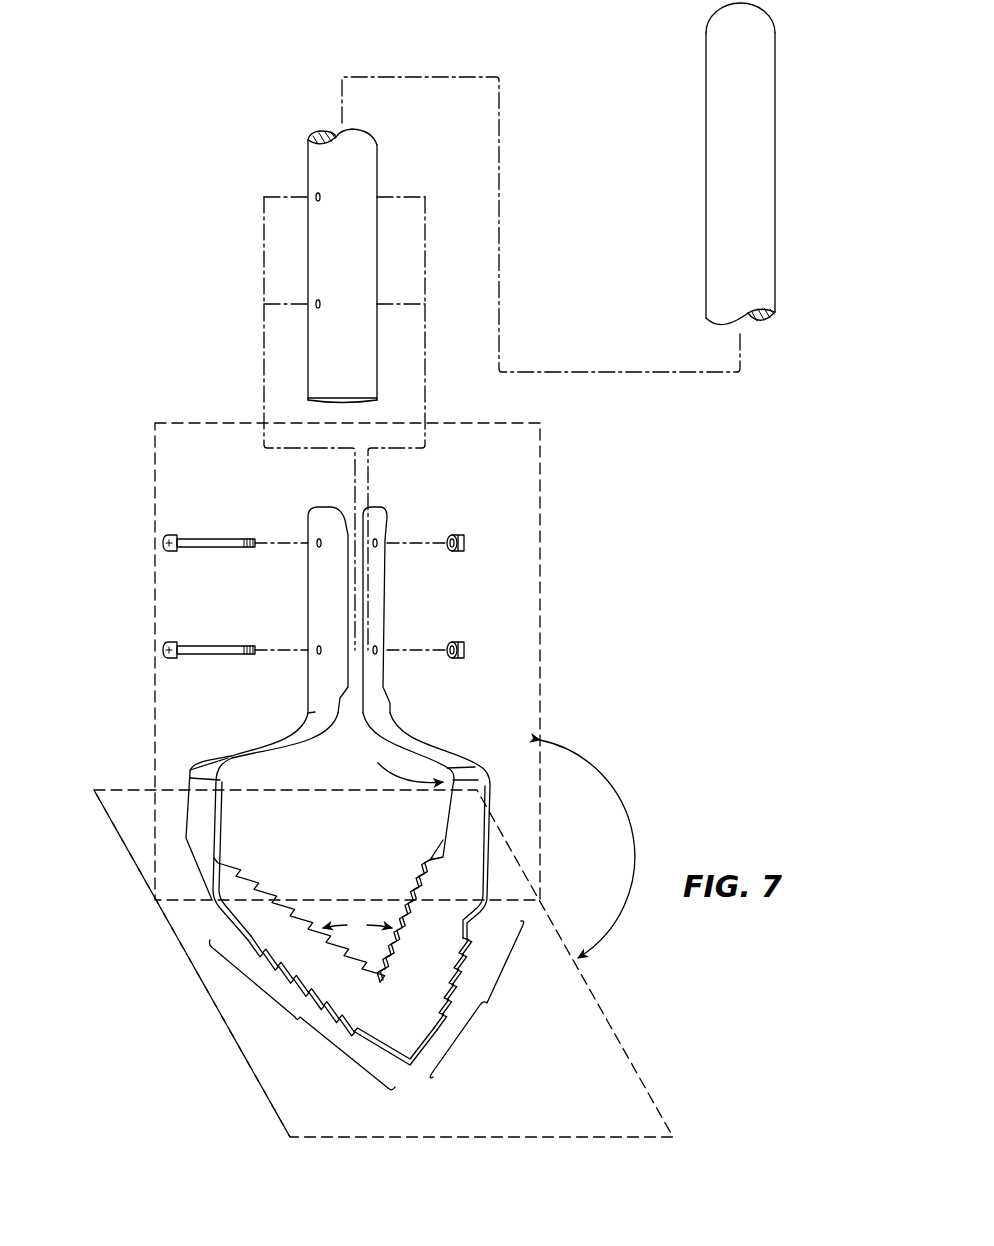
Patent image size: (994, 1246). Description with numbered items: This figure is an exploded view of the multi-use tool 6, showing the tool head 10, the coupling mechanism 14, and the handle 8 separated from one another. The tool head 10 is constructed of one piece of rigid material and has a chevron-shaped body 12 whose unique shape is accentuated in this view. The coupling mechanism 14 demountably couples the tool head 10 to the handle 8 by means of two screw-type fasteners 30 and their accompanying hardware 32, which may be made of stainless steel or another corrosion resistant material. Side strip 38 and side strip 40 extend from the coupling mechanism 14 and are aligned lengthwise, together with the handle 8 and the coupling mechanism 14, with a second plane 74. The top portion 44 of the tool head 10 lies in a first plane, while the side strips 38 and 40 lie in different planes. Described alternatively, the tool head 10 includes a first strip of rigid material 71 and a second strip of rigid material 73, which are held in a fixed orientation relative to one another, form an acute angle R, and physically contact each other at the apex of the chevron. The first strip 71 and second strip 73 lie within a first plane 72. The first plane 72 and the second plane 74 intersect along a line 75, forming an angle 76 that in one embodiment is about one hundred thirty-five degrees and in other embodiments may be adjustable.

The multi-use tool 6 is at (105, 88).
The handle 8 is at (359, 174).
The tool head 10 is at (127, 593).
The chevron-shaped body 12 is at (304, 901).
The coupling mechanism 14 is at (325, 600).
The screw-type fasteners 30 is at (207, 538).
The accompanying hardware 32 is at (465, 538).
The side strip 38 is at (171, 774).
The side strip 40 is at (500, 795).
The top portion 44 is at (408, 1027).
The first strip of rigid material 71 is at (303, 1015).
The first plane 72 is at (640, 1075).
The second strip of rigid material 73 is at (476, 999).
The second plane 74 is at (540, 603).
The line 75 is at (142, 898).
The angle 76 is at (630, 815).